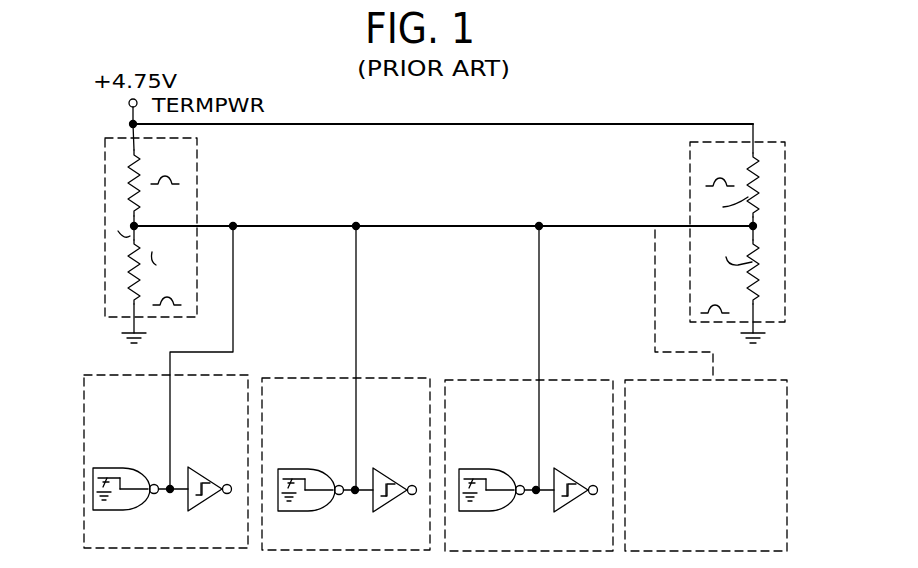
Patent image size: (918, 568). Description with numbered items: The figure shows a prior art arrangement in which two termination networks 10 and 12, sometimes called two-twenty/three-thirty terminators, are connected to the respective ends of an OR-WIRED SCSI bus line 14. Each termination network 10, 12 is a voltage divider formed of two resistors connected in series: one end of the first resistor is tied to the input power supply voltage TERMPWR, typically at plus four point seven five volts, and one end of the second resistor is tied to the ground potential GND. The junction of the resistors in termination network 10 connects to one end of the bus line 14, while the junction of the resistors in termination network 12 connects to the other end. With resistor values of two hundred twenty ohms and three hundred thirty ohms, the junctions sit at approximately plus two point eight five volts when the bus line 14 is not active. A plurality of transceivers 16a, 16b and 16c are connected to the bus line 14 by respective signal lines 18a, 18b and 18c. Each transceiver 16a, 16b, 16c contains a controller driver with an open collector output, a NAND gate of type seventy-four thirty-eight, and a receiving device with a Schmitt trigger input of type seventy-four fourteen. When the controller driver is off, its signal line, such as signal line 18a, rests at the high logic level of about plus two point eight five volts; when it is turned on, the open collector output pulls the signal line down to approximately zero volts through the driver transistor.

The termination network 10 is at (105, 311).
The termination network 12 is at (786, 298).
The bus line 14 is at (430, 223).
The transceiver 16a is at (161, 444).
The transceiver 16b is at (346, 444).
The transceiver 16c is at (529, 445).
The signal line 18a is at (234, 280).
The signal line 18b is at (357, 278).
The signal line 18c is at (540, 278).